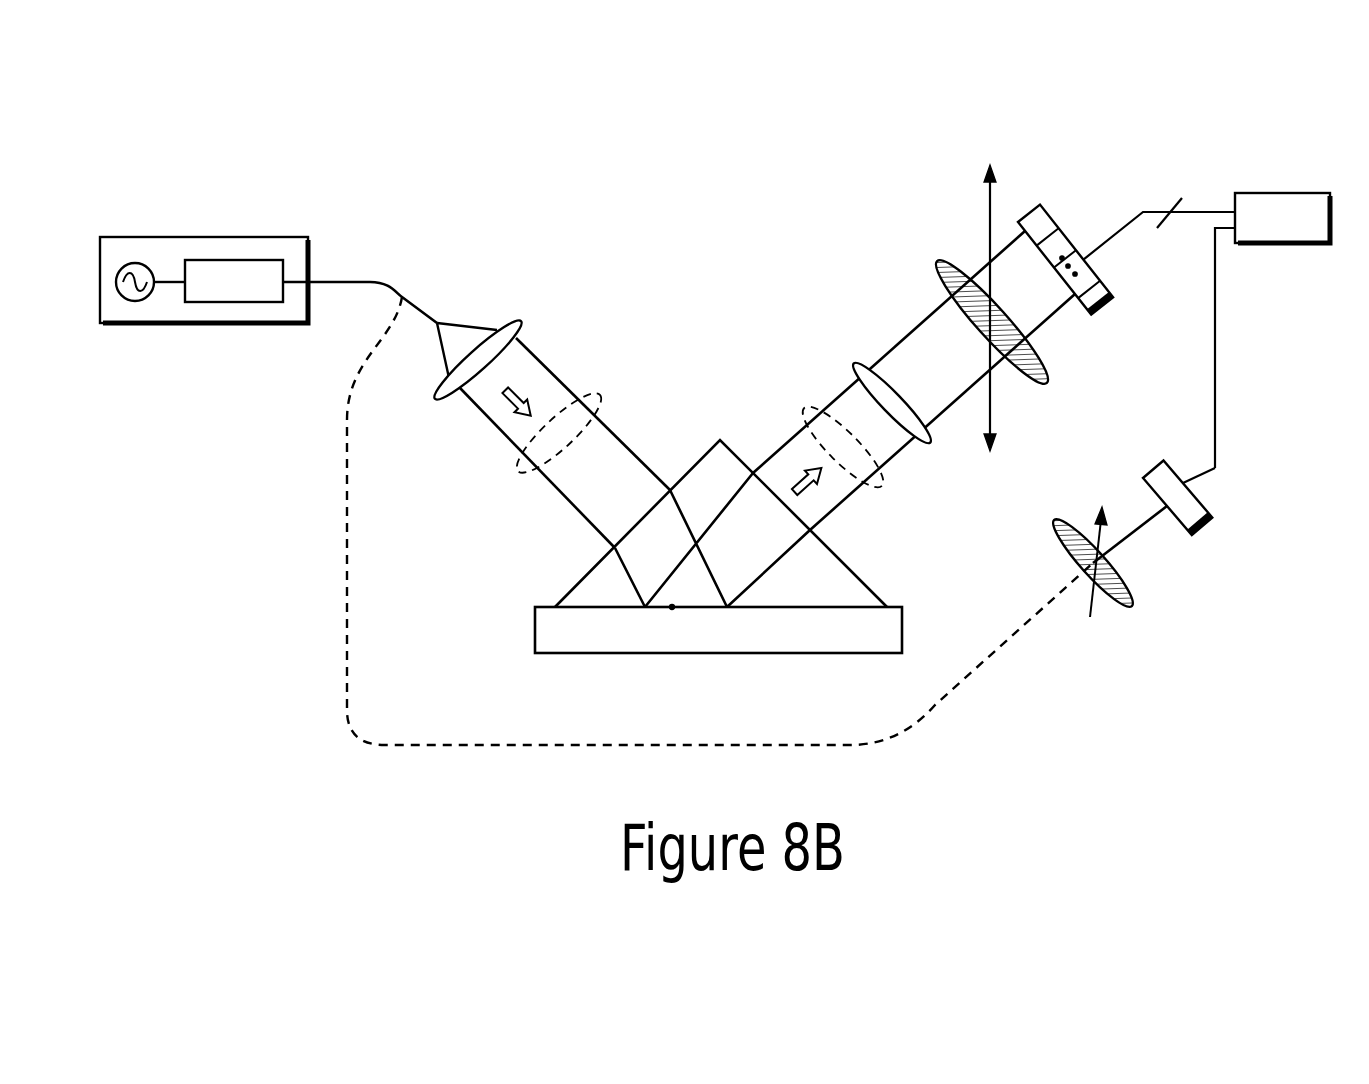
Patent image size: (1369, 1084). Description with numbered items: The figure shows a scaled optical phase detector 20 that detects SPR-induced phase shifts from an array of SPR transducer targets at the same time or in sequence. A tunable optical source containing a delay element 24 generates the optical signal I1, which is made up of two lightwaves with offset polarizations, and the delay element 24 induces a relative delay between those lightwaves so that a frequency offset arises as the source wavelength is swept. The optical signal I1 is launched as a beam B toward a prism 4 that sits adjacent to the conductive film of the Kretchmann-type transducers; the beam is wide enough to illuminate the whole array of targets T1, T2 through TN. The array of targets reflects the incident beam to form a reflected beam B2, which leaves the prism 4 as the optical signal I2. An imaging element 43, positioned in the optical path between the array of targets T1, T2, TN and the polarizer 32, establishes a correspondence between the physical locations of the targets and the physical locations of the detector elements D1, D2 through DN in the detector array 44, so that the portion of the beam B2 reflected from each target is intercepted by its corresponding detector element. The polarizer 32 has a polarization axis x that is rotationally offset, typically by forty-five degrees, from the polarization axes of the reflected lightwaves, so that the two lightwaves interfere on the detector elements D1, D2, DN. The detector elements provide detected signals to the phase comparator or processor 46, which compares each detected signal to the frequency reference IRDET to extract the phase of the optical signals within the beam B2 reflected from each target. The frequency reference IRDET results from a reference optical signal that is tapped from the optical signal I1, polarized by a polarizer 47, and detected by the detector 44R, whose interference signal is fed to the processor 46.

The optical phase detector 20 is at (172, 572).
The delay element 24 is at (252, 298).
The prism 4 is at (843, 601).
The polarizer 32 is at (1047, 383).
The imaging element 43 is at (930, 447).
The detector array 44 is at (1107, 311).
The detector 44R is at (1205, 534).
The processor 46 is at (1300, 233).
The focusing element 47 is at (1132, 608).
The optical signal I1 is at (357, 280).
The optical signal I2 is at (843, 503).
The beam B is at (598, 398).
The beam B2 is at (806, 408).
The target T1 is at (645, 607).
The target T2 is at (672, 607).
The target TN is at (727, 607).
The detector element D1 is at (1043, 208).
The detector element D2 is at (1062, 230).
The detector element DN is at (1106, 282).
The polarization axis x is at (990, 204).
The frequency reference IRDET is at (1215, 335).